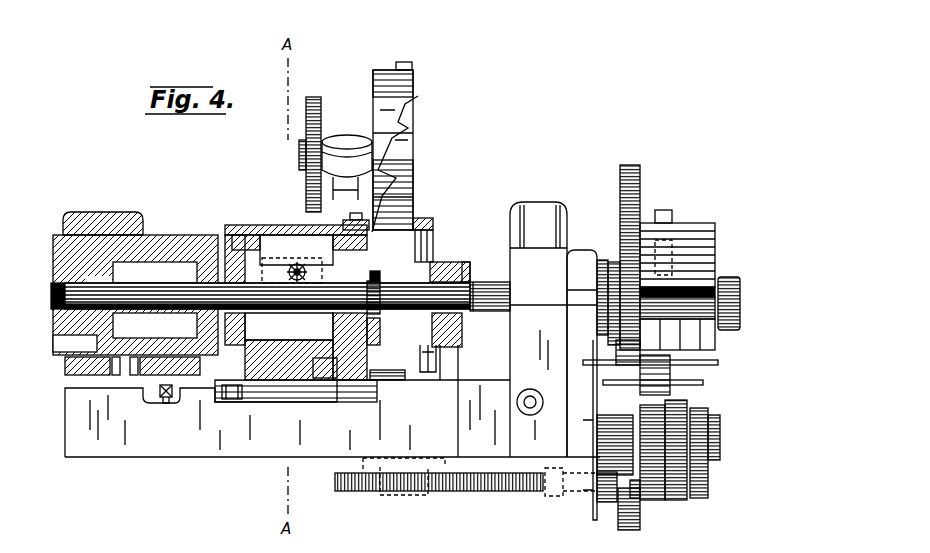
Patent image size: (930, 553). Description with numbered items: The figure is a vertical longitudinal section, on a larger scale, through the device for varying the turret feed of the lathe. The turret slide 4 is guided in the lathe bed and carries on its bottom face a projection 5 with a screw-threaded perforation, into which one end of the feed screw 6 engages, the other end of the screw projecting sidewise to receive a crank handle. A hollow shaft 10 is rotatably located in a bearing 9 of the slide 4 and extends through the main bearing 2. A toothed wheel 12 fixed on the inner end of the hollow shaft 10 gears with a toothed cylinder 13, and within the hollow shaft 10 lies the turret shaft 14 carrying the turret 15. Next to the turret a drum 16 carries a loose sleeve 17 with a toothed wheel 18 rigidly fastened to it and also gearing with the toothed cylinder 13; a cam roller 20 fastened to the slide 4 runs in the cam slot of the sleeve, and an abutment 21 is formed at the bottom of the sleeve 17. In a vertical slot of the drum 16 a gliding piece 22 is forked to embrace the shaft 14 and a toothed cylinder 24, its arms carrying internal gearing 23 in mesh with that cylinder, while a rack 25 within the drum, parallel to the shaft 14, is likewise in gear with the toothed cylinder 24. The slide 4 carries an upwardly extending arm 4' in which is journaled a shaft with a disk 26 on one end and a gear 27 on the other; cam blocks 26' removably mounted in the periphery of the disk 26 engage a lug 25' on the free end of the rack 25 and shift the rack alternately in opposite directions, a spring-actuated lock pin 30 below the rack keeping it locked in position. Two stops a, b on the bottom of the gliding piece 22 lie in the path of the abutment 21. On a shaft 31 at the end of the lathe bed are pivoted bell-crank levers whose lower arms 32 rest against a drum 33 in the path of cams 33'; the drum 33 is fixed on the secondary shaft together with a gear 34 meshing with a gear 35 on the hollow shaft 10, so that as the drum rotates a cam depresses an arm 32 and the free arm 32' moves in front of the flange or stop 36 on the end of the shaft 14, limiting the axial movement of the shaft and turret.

The main bearing 2 is at (582, 256).
The turret slide 4 is at (332, 414).
The rearward and upwardly extending arm 4' is at (347, 167).
The projection 5 is at (415, 497).
The feed screw 6 is at (510, 492).
The bearing 9 is at (458, 280).
The hollow shaft 10 is at (485, 290).
The toothed wheel 12 is at (434, 226).
The toothed cylinder 13 is at (372, 395).
The turret shaft 14 is at (432, 297).
The turret 15 is at (165, 242).
The drum 16 is at (215, 355).
The loose sleeve 17 is at (262, 228).
The toothed wheel 18 is at (356, 220).
The cam roller 20 is at (246, 400).
The abutment 21 is at (340, 390).
The gliding piece 22 is at (262, 340).
The internal gearing 23 is at (285, 240).
The toothed cylinder 24 is at (300, 262).
The rack 25 is at (296, 238).
The lug 25' is at (430, 212).
The disk 26 is at (377, 146).
The cam blocks 26' is at (411, 160).
The gear 27 is at (318, 99).
The spring-actuated lock pin 30 is at (378, 284).
The shaft 31 is at (712, 430).
The lower arms of bell-crank levers 32 is at (669, 483).
The free arm of bell-crank lever 32' is at (663, 375).
The drum 33 is at (692, 286).
The cams 33' is at (677, 232).
The gear 34 is at (630, 172).
The gear 35 is at (612, 268).
The flange or stop 36 is at (728, 330).
The stop a is at (288, 396).
The stop b is at (318, 396).